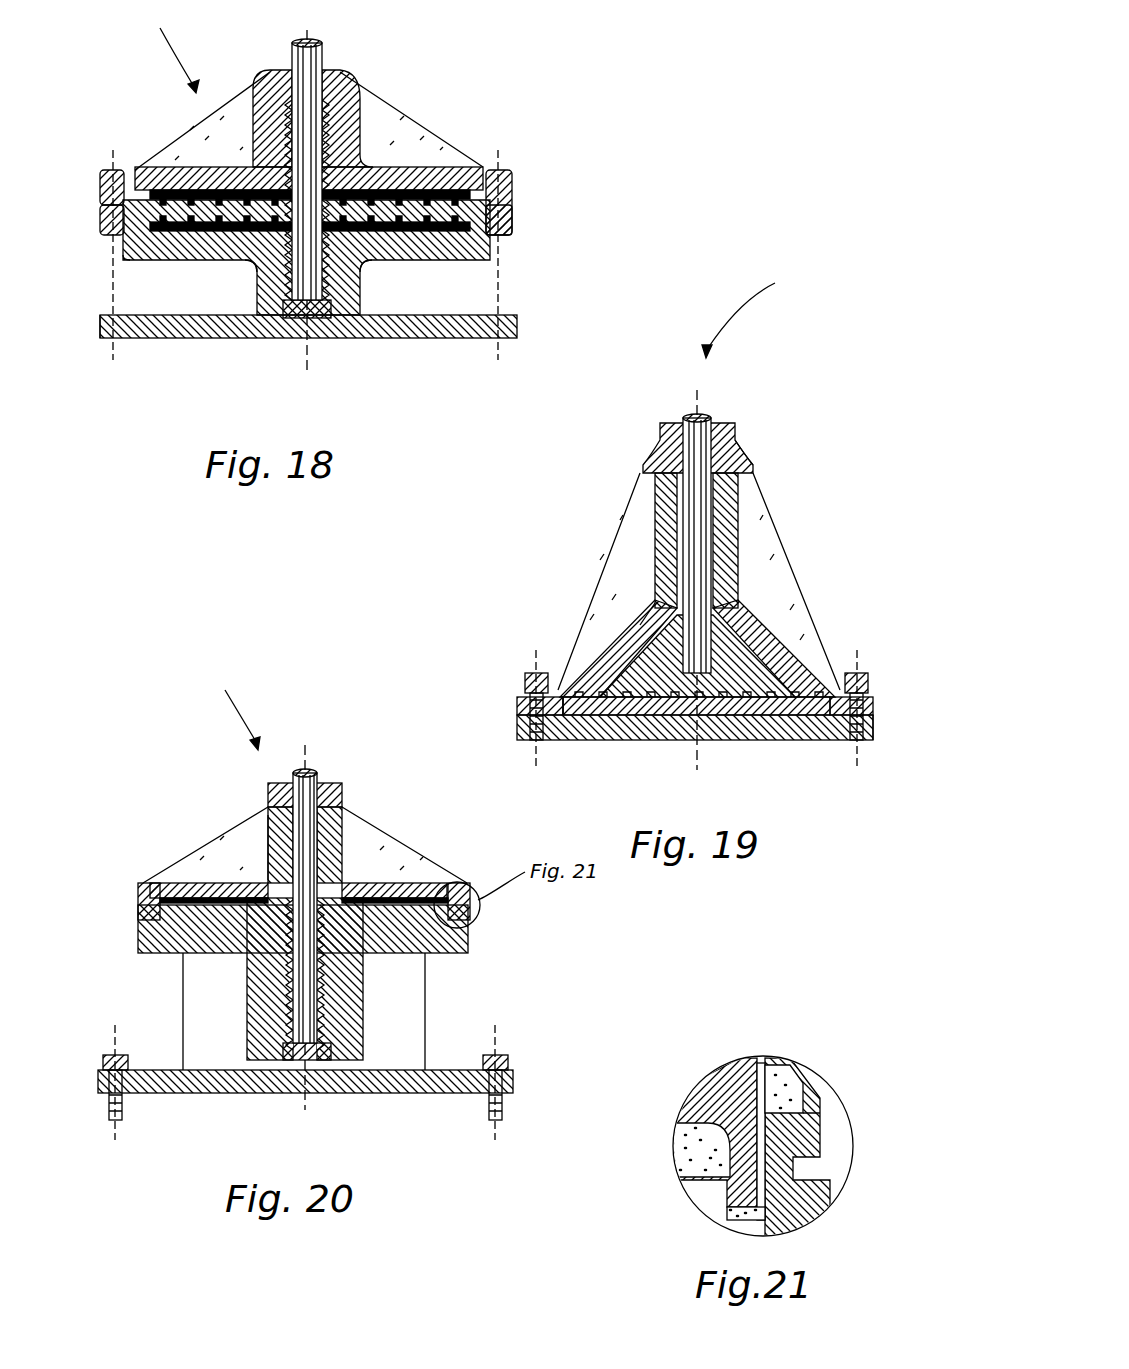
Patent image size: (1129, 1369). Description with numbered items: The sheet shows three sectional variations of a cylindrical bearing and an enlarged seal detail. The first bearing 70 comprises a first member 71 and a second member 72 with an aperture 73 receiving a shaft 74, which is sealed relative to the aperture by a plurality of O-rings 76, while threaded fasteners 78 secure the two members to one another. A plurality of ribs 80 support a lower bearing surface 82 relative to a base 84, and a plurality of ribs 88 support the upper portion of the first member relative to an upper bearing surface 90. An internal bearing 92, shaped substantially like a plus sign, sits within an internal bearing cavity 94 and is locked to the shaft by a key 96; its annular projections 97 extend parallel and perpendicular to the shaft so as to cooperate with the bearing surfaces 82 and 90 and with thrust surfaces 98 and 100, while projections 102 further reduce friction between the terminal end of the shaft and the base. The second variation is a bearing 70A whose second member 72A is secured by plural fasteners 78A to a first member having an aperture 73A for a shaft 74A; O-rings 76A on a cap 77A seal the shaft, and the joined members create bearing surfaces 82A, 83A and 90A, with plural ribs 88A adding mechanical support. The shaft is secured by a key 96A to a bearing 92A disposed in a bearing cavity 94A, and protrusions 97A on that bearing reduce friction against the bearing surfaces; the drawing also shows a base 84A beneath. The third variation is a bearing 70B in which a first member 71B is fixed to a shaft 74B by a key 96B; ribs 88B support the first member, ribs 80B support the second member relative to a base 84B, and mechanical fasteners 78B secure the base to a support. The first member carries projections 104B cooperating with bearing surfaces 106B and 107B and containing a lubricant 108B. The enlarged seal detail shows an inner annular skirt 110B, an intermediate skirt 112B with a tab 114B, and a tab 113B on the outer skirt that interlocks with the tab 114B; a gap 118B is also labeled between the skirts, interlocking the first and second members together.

In FIG. 18, the bearing 70 is at (162, 48).
In FIG. 18, the first member 71 is at (478, 160).
In FIG. 18, the second member 72 is at (130, 340).
In FIG. 18, the aperture 73 is at (272, 70).
In FIG. 18, the shaft 74 is at (320, 58).
In FIG. 18, the O-rings 76 is at (352, 137).
In FIG. 18, the threaded fasteners 78 is at (100, 180).
In FIG. 18, the ribs 80 is at (223, 292).
In FIG. 18, the bearing surface 82 is at (150, 262).
In FIG. 18, the base 84 is at (403, 335).
In FIG. 18, the ribs 88 is at (167, 152).
In FIG. 18, the bearing surface 90 is at (205, 168).
In FIG. 18, the internal bearing 92 is at (512, 188).
In FIG. 18, the internal bearing cavity 94 is at (207, 263).
In FIG. 18, the key 96 is at (108, 228).
In FIG. 18, the annular projections 97 is at (352, 150).
In FIG. 18, the thrust surface 98 is at (423, 165).
In FIG. 18, the thrust surface 100 is at (275, 125).
In FIG. 18, the projections 102 is at (307, 322).
In FIG. 19, the bearing 70A is at (767, 305).
In FIG. 19, the second member 72A is at (757, 733).
In FIG. 19, the aperture 73A is at (718, 478).
In FIG. 19, the shaft 74A is at (700, 415).
In FIG. 19, the O-rings 76A is at (735, 432).
In FIG. 19, the cap 77A is at (647, 457).
In FIG. 19, the fasteners 78A is at (528, 678).
In FIG. 19, the bearing surface 82A is at (655, 713).
In FIG. 19, the bearing surface 83A is at (578, 662).
In FIG. 19, the base plate 84A is at (740, 727).
In FIG. 19, the ribs 88A is at (617, 573).
In FIG. 19, the bearing surface 90A is at (670, 523).
In FIG. 19, the bearing 92A is at (668, 678).
In FIG. 19, the bearing cavity 94A is at (743, 622).
In FIG. 19, the key 96A is at (612, 625).
In FIG. 19, the protrusions 97A is at (713, 533).
In FIG. 20, the bearing 70B is at (225, 704).
In FIG. 20, the first member 71B is at (330, 830).
In FIG. 21, the first member 71B is at (742, 1073).
In FIG. 20, the shaft 74B is at (303, 772).
In FIG. 20, the mechanical fasteners 78B is at (115, 1040).
In FIG. 20, the ribs 80B is at (187, 1050).
In FIG. 20, the base 84B is at (223, 1083).
In FIG. 20, the ribs 88B is at (210, 860).
In FIG. 20, the key 96B is at (277, 883).
In FIG. 20, the projections 104B is at (210, 890).
In FIG. 20, the bearing surface 106B is at (160, 943).
In FIG. 20, the bearing surface 107B is at (160, 960).
In FIG. 20, the lubricant 108B is at (400, 1083).
In FIG. 21, the lubricant 108B is at (677, 1148).
In FIG. 21, the inner annular skirt 110B is at (723, 1215).
In FIG. 21, the intermediate skirt 112B is at (793, 1068).
In FIG. 21, the tab 113B is at (810, 1148).
In FIG. 21, the tab 114B is at (808, 1085).
In FIG. 21, the gap 118B is at (800, 1113).